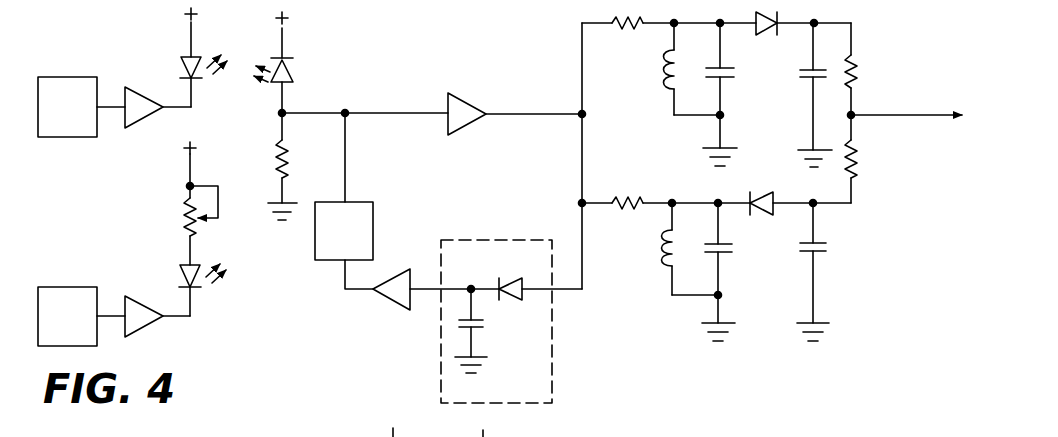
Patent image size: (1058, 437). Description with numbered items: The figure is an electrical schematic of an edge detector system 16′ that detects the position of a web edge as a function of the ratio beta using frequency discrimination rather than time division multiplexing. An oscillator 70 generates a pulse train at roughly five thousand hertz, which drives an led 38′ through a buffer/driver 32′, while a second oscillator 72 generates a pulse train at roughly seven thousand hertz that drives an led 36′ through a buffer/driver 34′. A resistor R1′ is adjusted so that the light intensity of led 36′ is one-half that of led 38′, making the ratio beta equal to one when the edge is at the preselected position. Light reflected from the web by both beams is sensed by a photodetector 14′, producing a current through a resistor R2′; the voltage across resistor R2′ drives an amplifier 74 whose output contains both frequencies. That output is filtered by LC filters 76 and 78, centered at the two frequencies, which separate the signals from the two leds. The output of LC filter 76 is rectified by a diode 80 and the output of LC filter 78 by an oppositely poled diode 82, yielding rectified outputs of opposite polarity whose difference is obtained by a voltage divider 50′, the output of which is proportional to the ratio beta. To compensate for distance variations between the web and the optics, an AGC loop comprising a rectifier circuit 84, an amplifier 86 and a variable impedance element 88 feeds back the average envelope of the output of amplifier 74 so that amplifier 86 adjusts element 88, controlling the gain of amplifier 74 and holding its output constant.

The oscillator 70 is at (60, 85).
The oscillator 72 is at (61, 291).
The buffer/driver 32′ is at (144, 93).
The buffer/driver 34′ is at (144, 303).
The led 36′ is at (182, 270).
The led 38′ is at (183, 58).
The resistor R1′ is at (221, 203).
The photodetector 14′ is at (292, 72).
The resistor R2′ is at (296, 166).
The edge detector system 16′ is at (419, 52).
The amplifier 74 is at (468, 110).
The variable impedance element 88 is at (372, 218).
The amplifier 86 is at (400, 273).
The rectifier circuit 84 is at (494, 249).
The LC filter 76 is at (662, 95).
The LC filter 78 is at (648, 285).
The diode 80 is at (758, 36).
The diode 82 is at (762, 198).
The voltage divider 50′ is at (920, 50).